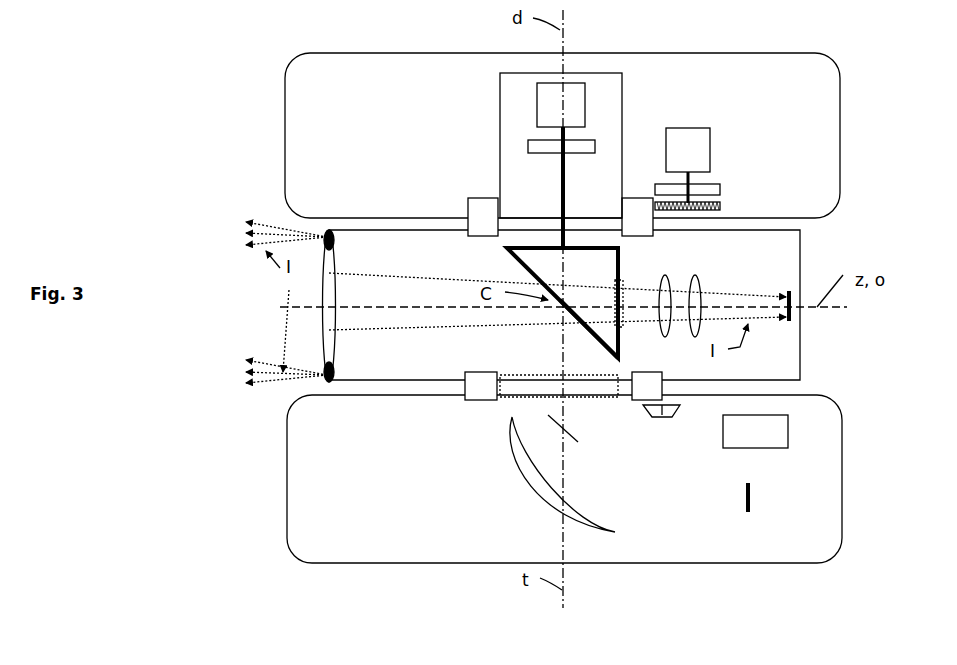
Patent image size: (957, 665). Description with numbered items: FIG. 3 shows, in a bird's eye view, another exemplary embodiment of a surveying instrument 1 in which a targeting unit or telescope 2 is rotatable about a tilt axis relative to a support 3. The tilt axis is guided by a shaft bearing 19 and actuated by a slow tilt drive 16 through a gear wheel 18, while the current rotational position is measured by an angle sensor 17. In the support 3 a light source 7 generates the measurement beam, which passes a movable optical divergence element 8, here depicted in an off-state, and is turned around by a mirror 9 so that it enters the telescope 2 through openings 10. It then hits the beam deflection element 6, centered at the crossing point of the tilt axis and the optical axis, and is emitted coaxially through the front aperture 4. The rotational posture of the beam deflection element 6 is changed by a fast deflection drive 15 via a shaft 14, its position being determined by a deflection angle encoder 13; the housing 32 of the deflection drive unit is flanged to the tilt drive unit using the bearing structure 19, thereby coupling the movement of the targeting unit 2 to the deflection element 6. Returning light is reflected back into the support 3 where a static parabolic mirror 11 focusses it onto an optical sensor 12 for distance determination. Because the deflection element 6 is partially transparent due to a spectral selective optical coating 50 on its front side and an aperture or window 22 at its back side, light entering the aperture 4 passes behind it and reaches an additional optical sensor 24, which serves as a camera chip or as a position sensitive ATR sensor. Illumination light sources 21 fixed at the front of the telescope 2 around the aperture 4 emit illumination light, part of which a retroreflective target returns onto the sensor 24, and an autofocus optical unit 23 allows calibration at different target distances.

The surveying instrument 1 is at (285, 40).
The targeting unit 2 is at (794, 259).
The support 3 is at (812, 91).
The aperture 4 is at (322, 327).
The beam deflection element 6 is at (609, 273).
The light source 7 is at (761, 442).
The optical divergence element 8 is at (662, 418).
The mirror 9 is at (557, 428).
The openings 10 is at (510, 401).
The static parabolic mirror 11 is at (542, 478).
The optical sensor 12 is at (752, 497).
The deflection angle encoder 13 is at (528, 146).
The shaft 14 is at (560, 188).
The deflection drive 15 is at (572, 113).
The tilt axis drive 16 is at (701, 159).
The angle sensor 17 is at (722, 189).
The gear wheel 18 is at (722, 205).
The shaft bearing 19 is at (494, 227).
The illumination light sources 21 is at (320, 234).
The aperture 22 is at (625, 290).
The optical unit 23 is at (690, 274).
The optical sensor 24 is at (795, 318).
The housing 32 is at (623, 100).
The spectral selective optical coating 50 is at (610, 340).